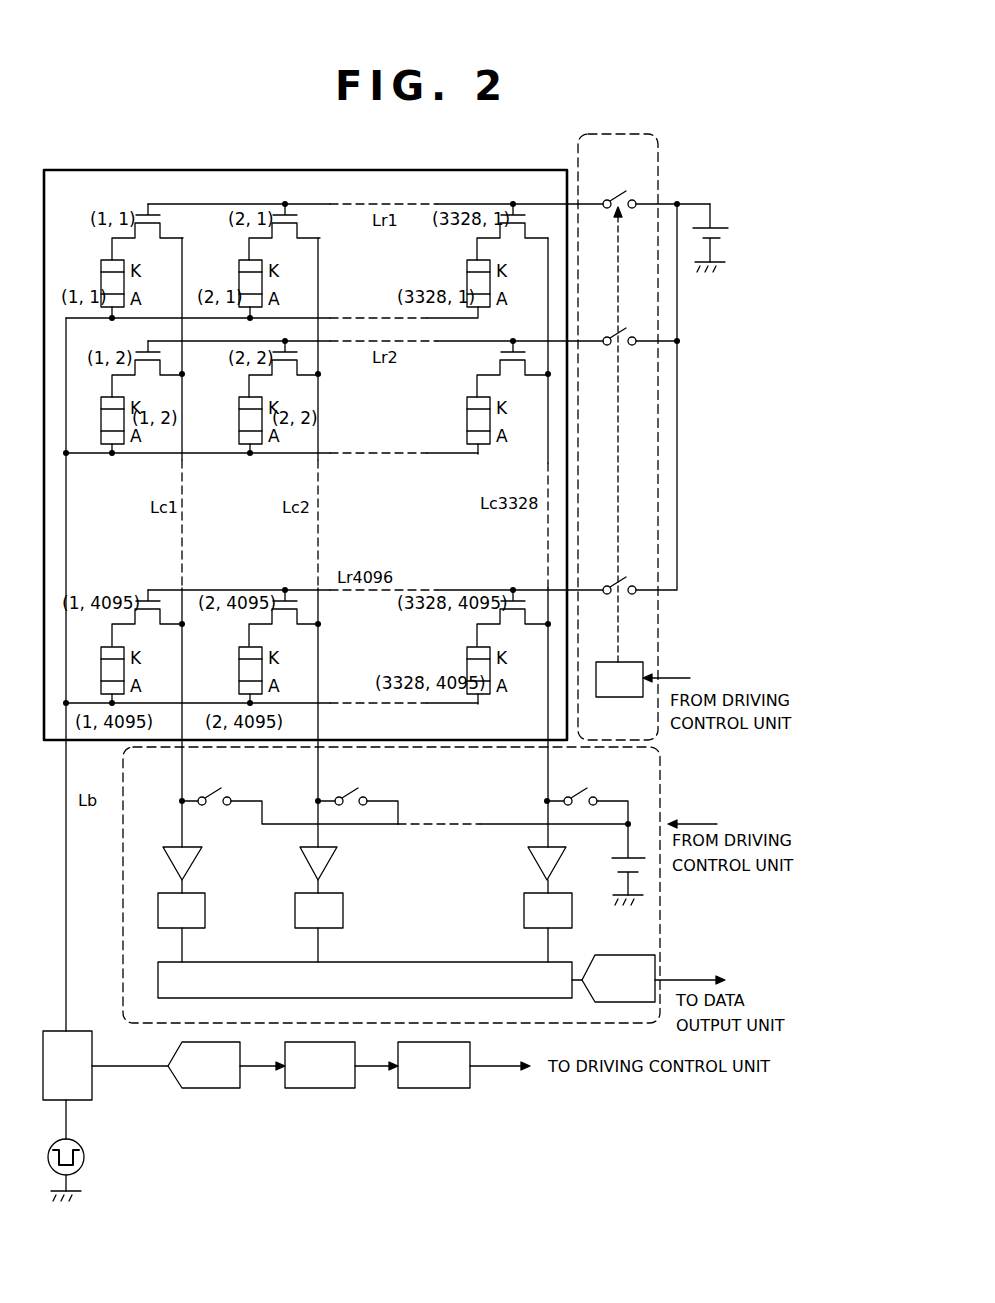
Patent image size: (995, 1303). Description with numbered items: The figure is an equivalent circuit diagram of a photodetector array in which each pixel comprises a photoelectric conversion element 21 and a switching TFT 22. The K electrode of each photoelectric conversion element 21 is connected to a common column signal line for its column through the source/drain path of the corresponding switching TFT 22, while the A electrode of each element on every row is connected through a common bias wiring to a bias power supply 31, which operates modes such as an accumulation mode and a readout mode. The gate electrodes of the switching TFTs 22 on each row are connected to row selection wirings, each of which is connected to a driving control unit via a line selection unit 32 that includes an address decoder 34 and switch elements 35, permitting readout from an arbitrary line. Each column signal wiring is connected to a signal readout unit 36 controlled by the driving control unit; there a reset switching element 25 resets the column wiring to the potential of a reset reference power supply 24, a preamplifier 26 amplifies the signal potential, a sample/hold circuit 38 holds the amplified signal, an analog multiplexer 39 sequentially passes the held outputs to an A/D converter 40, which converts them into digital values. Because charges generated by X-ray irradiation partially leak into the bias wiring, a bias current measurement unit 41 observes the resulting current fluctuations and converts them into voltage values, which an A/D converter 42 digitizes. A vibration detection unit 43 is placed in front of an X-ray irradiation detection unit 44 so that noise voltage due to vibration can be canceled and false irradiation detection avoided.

The photoelectric conversion element 21 is at (101, 272).
The switching TFT 22 is at (158, 215).
The reset reference power supply 24 is at (616, 870).
The reset switching element 25 is at (210, 791).
The preamplifier 26 is at (196, 862).
The bias power supply 31 is at (84, 1158).
The line selection unit 32 is at (637, 134).
The address decoder 34 is at (616, 662).
The switch element 35 is at (620, 190).
The signal readout unit 36 is at (661, 786).
The sample/hold circuit 38 is at (205, 912).
The analog multiplexer 39 is at (424, 962).
The A/D converter 40 is at (612, 955).
The bias current measurement unit 41 is at (86, 1031).
The A/D converter 42 is at (225, 1088).
The vibration detection unit 43 is at (333, 1088).
The X-ray irradiation detection unit 44 is at (447, 1088).